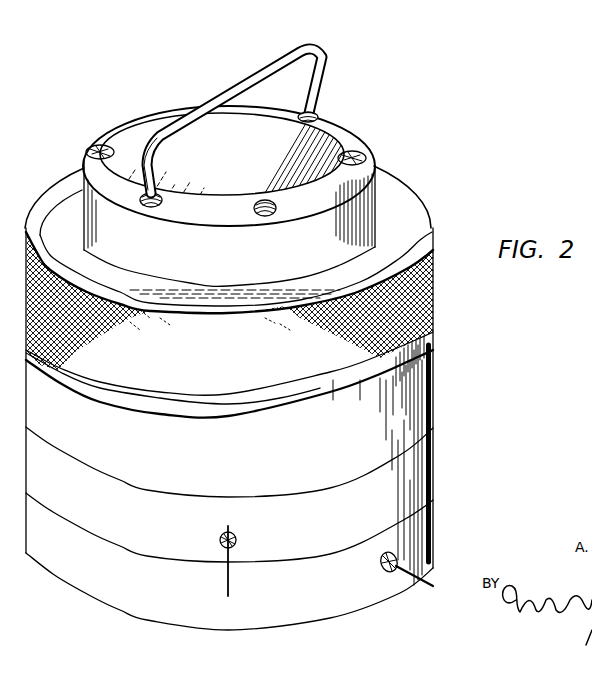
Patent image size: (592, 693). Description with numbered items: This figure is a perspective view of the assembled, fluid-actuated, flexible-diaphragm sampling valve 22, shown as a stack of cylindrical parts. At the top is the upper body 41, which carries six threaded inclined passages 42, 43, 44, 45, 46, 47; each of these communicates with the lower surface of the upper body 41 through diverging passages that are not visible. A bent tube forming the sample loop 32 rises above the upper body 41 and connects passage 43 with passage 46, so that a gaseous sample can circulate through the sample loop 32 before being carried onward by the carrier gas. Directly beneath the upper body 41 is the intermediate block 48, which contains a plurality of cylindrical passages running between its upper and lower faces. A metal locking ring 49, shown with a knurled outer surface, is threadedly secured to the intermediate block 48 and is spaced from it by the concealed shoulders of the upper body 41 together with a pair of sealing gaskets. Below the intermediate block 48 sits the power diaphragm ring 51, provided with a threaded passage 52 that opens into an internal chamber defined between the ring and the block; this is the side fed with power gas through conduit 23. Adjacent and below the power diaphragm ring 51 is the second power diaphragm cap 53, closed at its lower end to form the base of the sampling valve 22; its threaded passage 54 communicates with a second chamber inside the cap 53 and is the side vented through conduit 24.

The sampling valve 22 is at (434, 194).
The conduit 23 is at (226, 584).
The conduit 24 is at (432, 583).
The sample loop 32 is at (303, 72).
The upper body 41 is at (340, 132).
The threaded inclined passage 42 is at (278, 205).
The threaded inclined passage 43 is at (163, 197).
The threaded inclined passage 44 is at (88, 150).
The threaded inclined passage 45 is at (165, 113).
The threaded inclined passage 46 is at (319, 122).
The threaded inclined passage 47 is at (354, 150).
The intermediate block 48 is at (410, 427).
The metal locking ring 49 is at (430, 312).
The power diaphragm ring 51 is at (430, 477).
The threaded passage 52 is at (222, 533).
The power diaphragm cap 53 is at (413, 548).
The threaded passage 54 is at (390, 551).